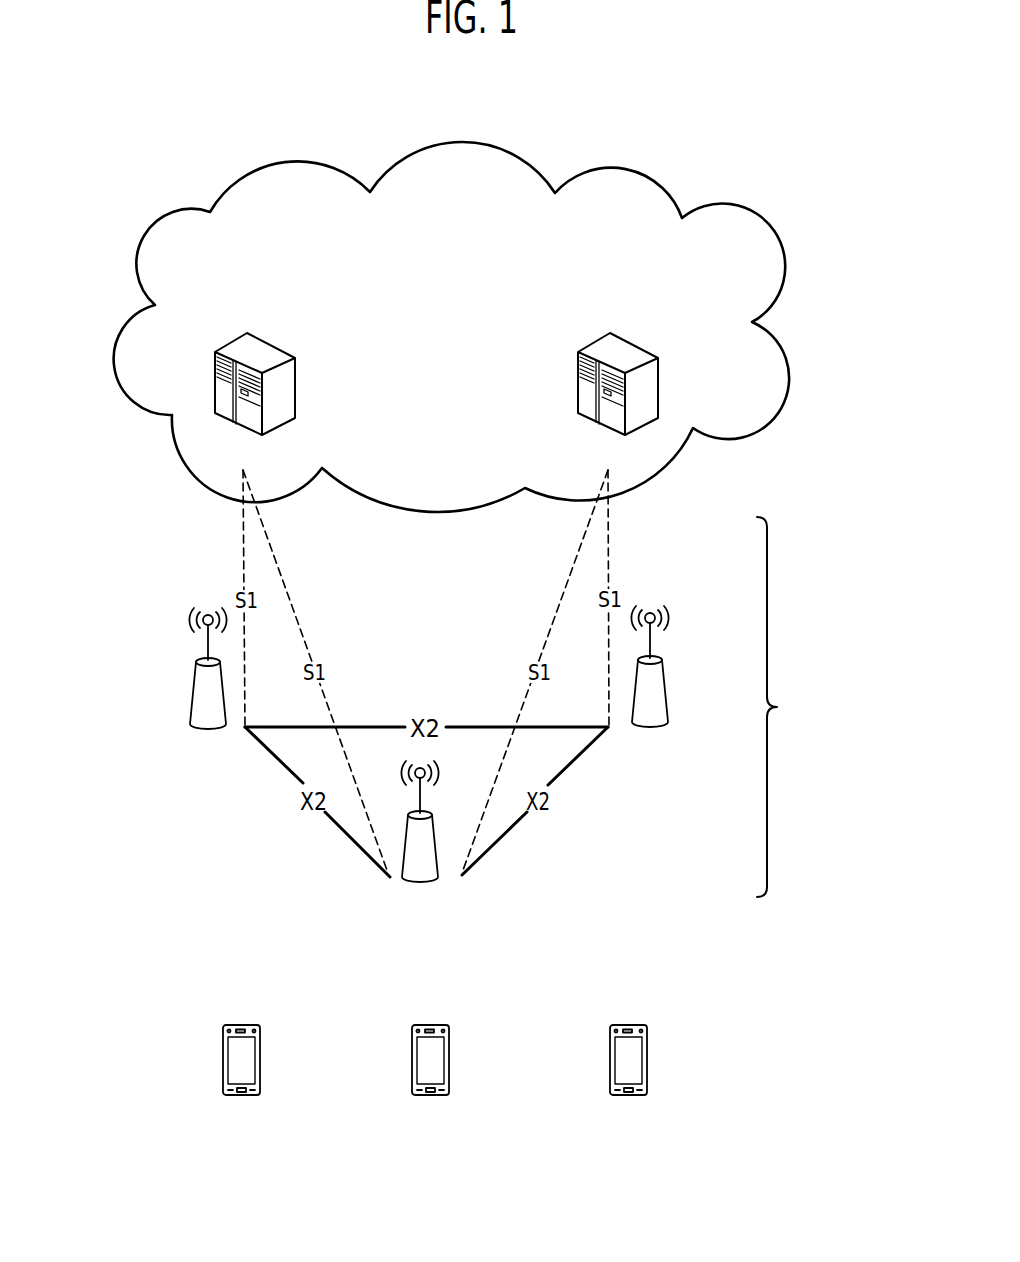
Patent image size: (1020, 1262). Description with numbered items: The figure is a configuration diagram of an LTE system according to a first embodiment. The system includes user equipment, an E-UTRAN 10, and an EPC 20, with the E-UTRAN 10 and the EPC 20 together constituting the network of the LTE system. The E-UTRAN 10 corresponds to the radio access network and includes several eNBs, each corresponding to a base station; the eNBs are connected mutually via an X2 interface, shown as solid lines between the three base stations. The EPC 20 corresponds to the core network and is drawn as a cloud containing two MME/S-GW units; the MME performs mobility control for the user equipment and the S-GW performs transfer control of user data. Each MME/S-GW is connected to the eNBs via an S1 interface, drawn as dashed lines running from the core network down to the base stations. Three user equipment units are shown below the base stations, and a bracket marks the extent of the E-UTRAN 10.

The EPC (Evolved Packet Core) 20 is at (660, 182).
The E-UTRAN (Evolved-UMTS Terrestrial Radio Access Network) 10 is at (817, 707).